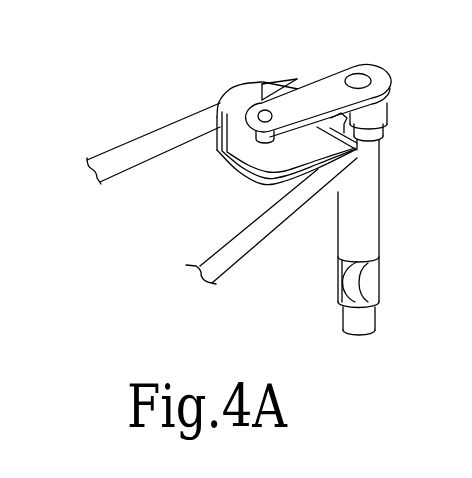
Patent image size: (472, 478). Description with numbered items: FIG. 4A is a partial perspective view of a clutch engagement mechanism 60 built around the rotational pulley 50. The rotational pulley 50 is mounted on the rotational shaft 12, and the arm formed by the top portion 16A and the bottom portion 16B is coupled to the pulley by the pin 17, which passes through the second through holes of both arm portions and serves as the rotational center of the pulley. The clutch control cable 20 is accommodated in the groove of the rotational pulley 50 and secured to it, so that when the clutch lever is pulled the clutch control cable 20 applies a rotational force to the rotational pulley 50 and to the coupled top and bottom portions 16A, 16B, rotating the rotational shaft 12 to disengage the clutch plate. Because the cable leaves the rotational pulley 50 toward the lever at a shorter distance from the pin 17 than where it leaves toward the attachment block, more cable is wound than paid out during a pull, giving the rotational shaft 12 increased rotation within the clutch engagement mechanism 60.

The rotational shaft 12 is at (338, 249).
The top portion of the arm 16A is at (314, 92).
The bottom portion of the arm 16B is at (385, 137).
The pin 17 is at (471, 307).
The clutch control cable 20 is at (131, 148).
The rotational pulley 50 is at (222, 100).
The clutch engagement mechanism 60 is at (162, 242).